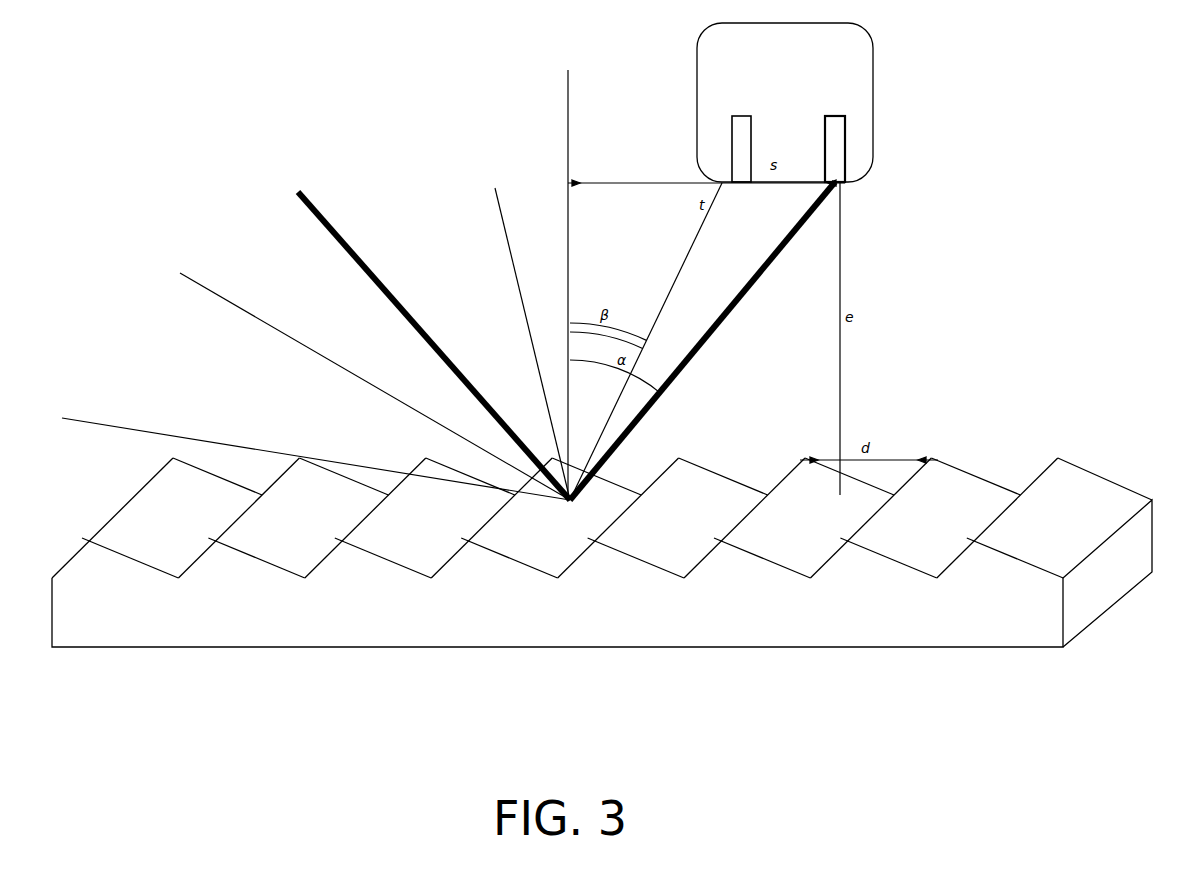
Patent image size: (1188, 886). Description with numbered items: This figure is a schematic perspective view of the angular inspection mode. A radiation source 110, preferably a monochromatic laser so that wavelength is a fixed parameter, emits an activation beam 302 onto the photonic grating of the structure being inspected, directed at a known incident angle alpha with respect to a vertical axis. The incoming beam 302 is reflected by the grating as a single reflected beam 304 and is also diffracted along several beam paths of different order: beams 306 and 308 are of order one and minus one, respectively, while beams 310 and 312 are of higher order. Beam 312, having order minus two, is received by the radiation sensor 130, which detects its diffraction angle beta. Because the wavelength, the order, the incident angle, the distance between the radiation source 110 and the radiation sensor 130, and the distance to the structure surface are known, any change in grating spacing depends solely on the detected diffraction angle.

The radiation source 110 is at (833, 116).
The radiation sensor 130 is at (748, 116).
The activation beam 302 is at (724, 318).
The reflected beam 304 is at (874, 88).
The diffracted beam of order 1 306 is at (243, 312).
The diffracted beam of order -1 308 is at (516, 268).
The diffracted beam 310 is at (178, 435).
The diffracted beam of order -2 312 is at (677, 285).